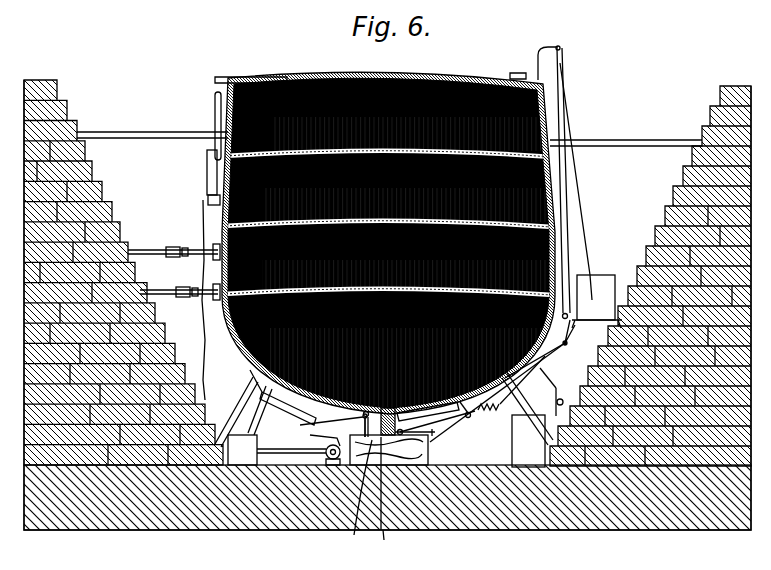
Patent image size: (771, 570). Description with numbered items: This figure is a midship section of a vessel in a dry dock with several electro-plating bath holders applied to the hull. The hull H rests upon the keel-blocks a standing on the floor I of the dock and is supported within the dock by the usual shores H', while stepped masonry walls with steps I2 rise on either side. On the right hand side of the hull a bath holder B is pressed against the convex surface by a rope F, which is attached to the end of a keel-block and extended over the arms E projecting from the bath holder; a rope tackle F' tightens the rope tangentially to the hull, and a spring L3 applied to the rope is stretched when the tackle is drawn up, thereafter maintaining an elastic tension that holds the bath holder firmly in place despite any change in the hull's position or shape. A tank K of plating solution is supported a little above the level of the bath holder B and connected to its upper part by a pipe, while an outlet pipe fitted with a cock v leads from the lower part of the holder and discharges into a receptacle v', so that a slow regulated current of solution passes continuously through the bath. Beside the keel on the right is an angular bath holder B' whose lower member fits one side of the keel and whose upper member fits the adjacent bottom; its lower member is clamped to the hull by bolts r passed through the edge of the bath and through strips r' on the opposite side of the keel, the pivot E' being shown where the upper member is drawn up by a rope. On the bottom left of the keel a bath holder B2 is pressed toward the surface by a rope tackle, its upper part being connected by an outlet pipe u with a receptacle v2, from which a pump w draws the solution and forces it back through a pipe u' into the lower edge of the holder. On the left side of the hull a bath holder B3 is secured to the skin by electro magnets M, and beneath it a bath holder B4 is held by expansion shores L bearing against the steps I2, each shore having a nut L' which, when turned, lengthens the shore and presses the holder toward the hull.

The hull H is at (387, 236).
The shores H' is at (389, 130).
The bath holder B3 is at (207, 176).
The electro magnets M is at (208, 201).
The steps I2 is at (118, 232).
The expansion shores L is at (174, 247).
The nut L' is at (171, 233).
The bath holder B4 is at (215, 272).
The rope tackle F' is at (564, 182).
The tank K is at (591, 195).
The receptacle v2 is at (242, 450).
The outlet pipe u is at (243, 412).
The bath holder B2 is at (283, 397).
The pipe u' is at (323, 425).
The pump w is at (298, 443).
The keel-blocks a is at (428, 455).
The bolts r is at (385, 497).
The strips r' is at (361, 498).
The bath holder B' is at (428, 418).
The pivot E' is at (461, 407).
The rope F is at (499, 395).
The spring L3 is at (472, 394).
The floor I is at (480, 453).
The receptacle v' is at (527, 420).
The cock v is at (568, 402).
The arms E is at (548, 381).
The bath holder B is at (541, 349).